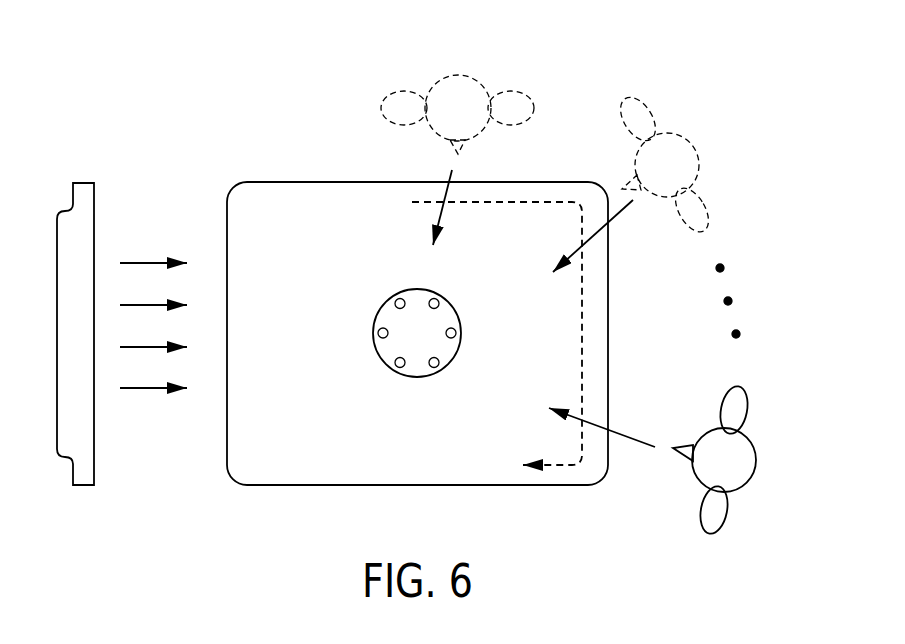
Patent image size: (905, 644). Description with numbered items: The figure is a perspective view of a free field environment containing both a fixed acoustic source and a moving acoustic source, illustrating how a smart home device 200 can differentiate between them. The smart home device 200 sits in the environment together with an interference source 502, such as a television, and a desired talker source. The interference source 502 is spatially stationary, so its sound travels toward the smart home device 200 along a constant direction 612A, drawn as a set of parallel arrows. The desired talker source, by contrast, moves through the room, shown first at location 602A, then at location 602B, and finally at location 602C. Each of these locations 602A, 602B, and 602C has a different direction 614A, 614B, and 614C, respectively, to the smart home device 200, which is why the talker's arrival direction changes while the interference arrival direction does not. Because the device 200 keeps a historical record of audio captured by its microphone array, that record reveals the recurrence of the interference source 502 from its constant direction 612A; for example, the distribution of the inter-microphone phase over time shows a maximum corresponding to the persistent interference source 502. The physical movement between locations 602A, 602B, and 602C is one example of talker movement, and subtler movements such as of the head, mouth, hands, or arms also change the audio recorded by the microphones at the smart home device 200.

The smart home device 200 is at (390, 362).
The interference source 502 is at (94, 470).
The location of desired talker source 602A is at (473, 80).
The location of desired talker source 602B is at (700, 151).
The location of desired talker source 602C is at (757, 452).
The constant direction 612A is at (143, 263).
The direction 614A is at (442, 210).
The direction 614B is at (618, 215).
The direction 614C is at (625, 432).